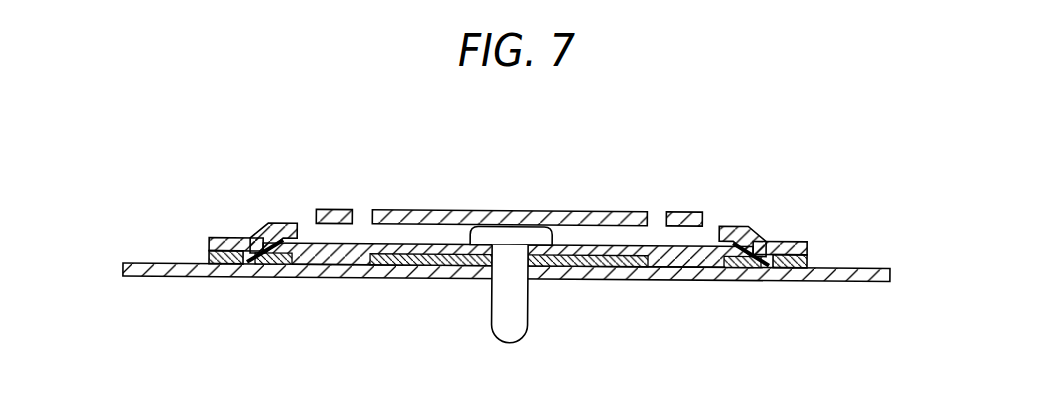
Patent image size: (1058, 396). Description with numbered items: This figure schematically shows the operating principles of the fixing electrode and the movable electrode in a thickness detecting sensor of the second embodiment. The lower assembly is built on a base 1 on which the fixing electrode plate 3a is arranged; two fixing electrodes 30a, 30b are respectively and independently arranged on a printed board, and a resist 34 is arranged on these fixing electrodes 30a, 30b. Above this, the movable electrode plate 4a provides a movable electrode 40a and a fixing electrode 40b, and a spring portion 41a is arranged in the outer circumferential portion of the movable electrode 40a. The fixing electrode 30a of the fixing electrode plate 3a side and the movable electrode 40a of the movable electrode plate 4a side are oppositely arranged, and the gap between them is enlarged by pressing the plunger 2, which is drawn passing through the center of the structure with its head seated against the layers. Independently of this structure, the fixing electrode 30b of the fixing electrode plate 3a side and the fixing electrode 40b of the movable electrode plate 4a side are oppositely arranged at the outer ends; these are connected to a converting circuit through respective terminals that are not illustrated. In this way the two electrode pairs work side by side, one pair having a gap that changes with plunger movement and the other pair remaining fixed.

The substrate 1 is at (165, 277).
The plunger 2 is at (508, 336).
The fixing electrode plate 3a is at (208, 258).
The movable electrode plate 4a is at (208, 240).
The fixing electrode 30a is at (425, 278).
The fixing electrode 30b is at (273, 278).
The resist 34 is at (366, 242).
The movable electrode 40a is at (510, 208).
The fixing electrode 40b is at (276, 222).
The spring portion 41a is at (328, 208).